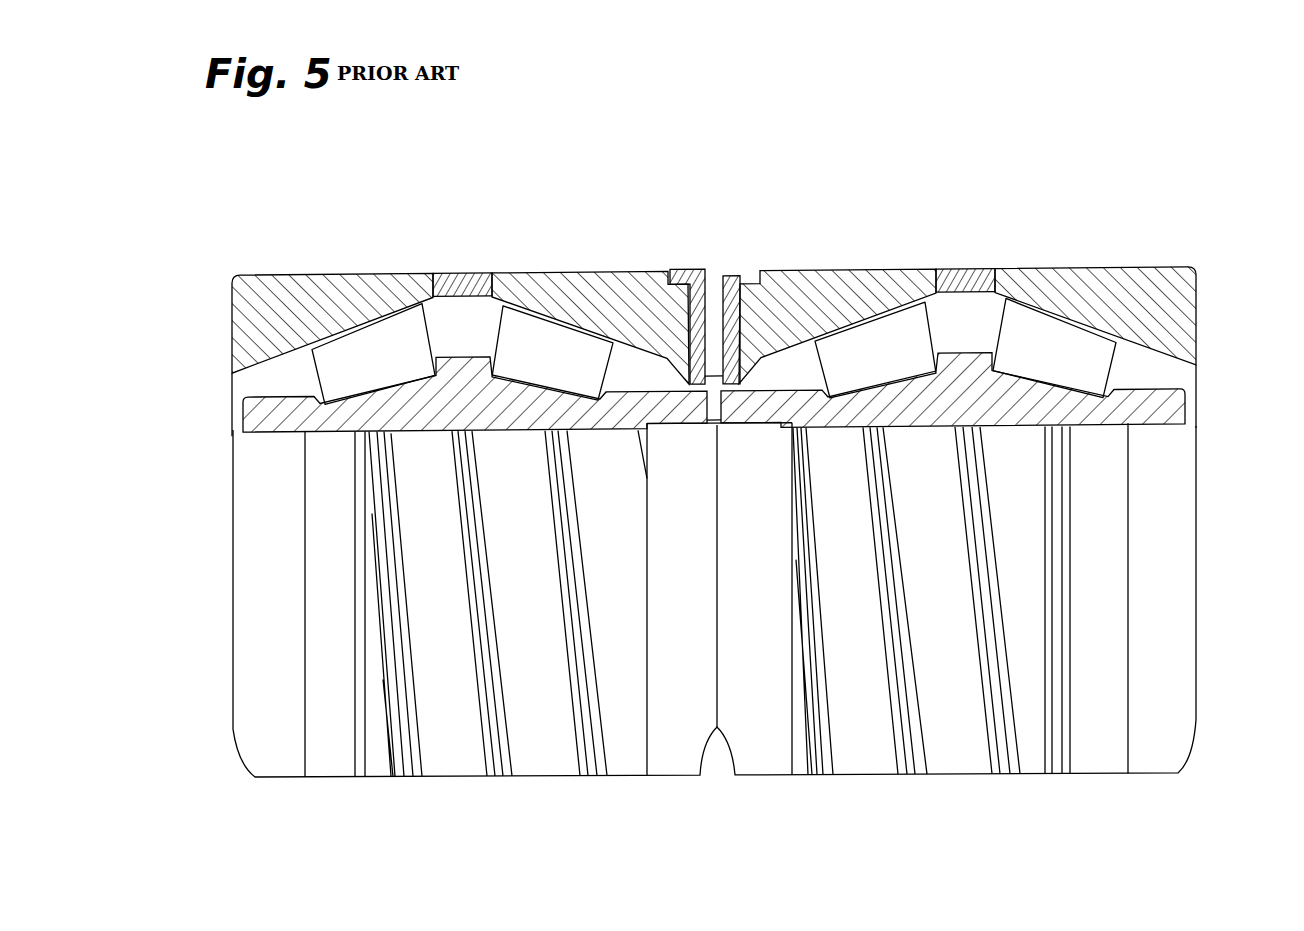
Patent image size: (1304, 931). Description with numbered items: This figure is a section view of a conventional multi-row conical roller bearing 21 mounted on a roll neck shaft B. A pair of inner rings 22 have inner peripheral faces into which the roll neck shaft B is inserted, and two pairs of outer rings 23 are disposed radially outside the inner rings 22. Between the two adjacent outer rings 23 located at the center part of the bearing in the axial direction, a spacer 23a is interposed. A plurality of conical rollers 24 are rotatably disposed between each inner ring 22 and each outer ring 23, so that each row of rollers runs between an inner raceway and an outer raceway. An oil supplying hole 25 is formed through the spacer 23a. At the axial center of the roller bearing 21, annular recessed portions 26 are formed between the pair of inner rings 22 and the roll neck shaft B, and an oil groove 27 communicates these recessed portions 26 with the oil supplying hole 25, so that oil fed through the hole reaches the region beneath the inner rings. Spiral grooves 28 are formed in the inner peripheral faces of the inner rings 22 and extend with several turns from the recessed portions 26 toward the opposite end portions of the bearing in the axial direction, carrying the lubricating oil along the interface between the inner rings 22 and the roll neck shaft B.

The multi-row conical roller bearing 21 is at (548, 206).
The inner ring 22 is at (243, 414).
The outer ring 23 is at (523, 293).
The spacer 23a is at (743, 287).
The conical roller 24 is at (363, 347).
The oil supplying hole 25 is at (717, 298).
The annular recessed portion 26 is at (672, 433).
The oil groove 27 is at (667, 272).
The spiral groove 28 is at (500, 777).
The roll neck shaft B is at (1167, 575).